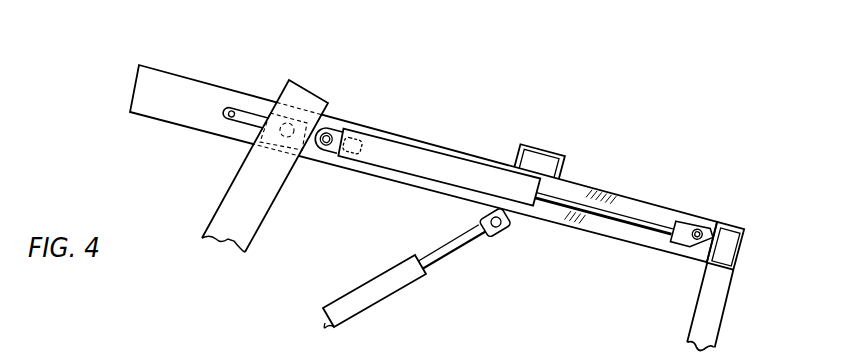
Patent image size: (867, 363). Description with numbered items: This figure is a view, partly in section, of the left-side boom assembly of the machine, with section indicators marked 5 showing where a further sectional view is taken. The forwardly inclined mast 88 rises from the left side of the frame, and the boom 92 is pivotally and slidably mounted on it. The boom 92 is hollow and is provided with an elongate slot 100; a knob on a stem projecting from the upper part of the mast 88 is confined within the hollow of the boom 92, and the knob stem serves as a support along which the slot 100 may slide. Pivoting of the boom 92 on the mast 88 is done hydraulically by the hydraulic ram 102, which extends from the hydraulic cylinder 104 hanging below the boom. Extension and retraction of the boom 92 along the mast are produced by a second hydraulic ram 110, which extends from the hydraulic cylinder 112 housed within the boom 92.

The forwardly inclined mast 88 is at (240, 166).
The boom 92 is at (615, 198).
The elongate slot 100 is at (227, 106).
The hydraulic ram 102 is at (465, 244).
The hydraulic cylinder 104 is at (393, 293).
The hydraulic ram 110 is at (622, 222).
The hydraulic cylinder 112 is at (393, 168).
The section line 5- 5 is at (258, 42).